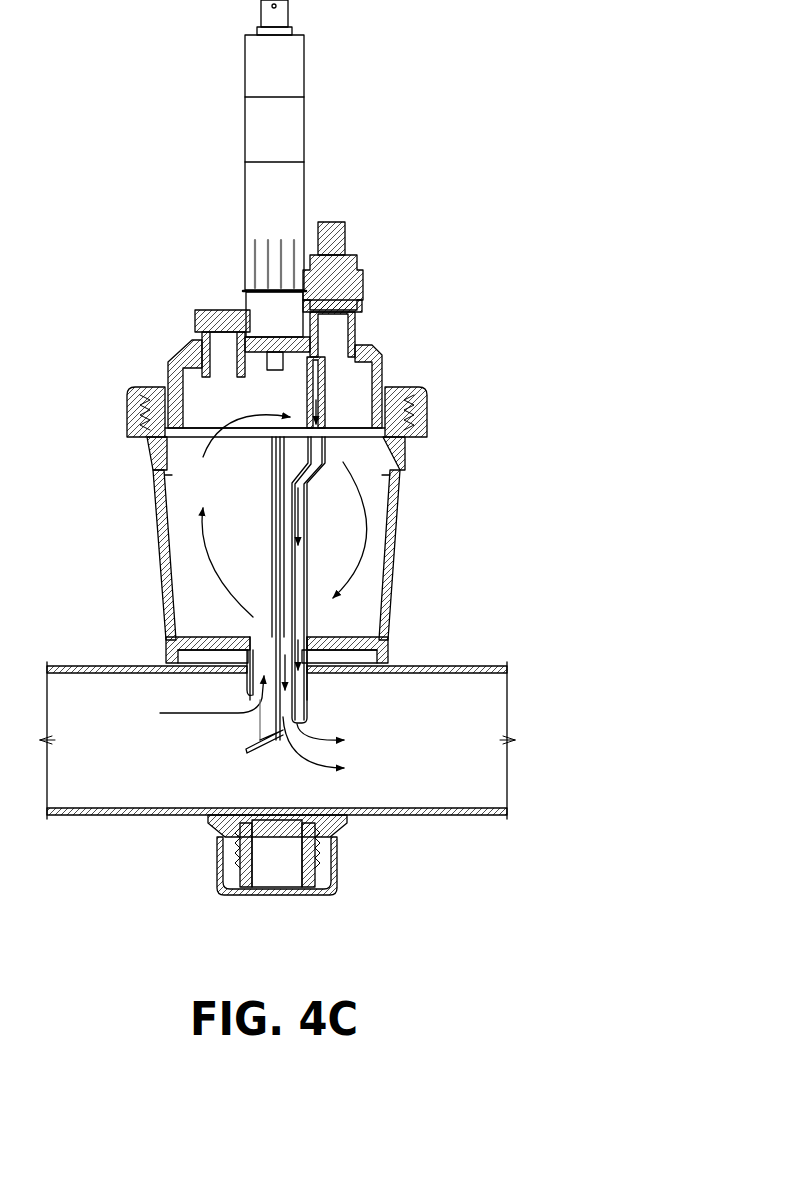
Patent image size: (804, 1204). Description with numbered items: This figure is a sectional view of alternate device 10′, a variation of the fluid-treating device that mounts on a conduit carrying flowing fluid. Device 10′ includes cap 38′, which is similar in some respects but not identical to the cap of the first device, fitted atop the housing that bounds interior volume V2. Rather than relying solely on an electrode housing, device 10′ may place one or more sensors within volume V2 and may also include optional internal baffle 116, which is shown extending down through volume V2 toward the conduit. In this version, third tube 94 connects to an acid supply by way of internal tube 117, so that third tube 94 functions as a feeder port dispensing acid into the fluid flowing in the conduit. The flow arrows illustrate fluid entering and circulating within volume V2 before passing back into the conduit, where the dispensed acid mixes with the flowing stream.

The alternate device 10′ is at (416, 298).
The cap 38′ is at (382, 373).
The third tube 94 is at (307, 698).
The internal baffle 116 is at (262, 488).
The internal tube 117 is at (302, 560).
The interior volume V2 is at (353, 607).